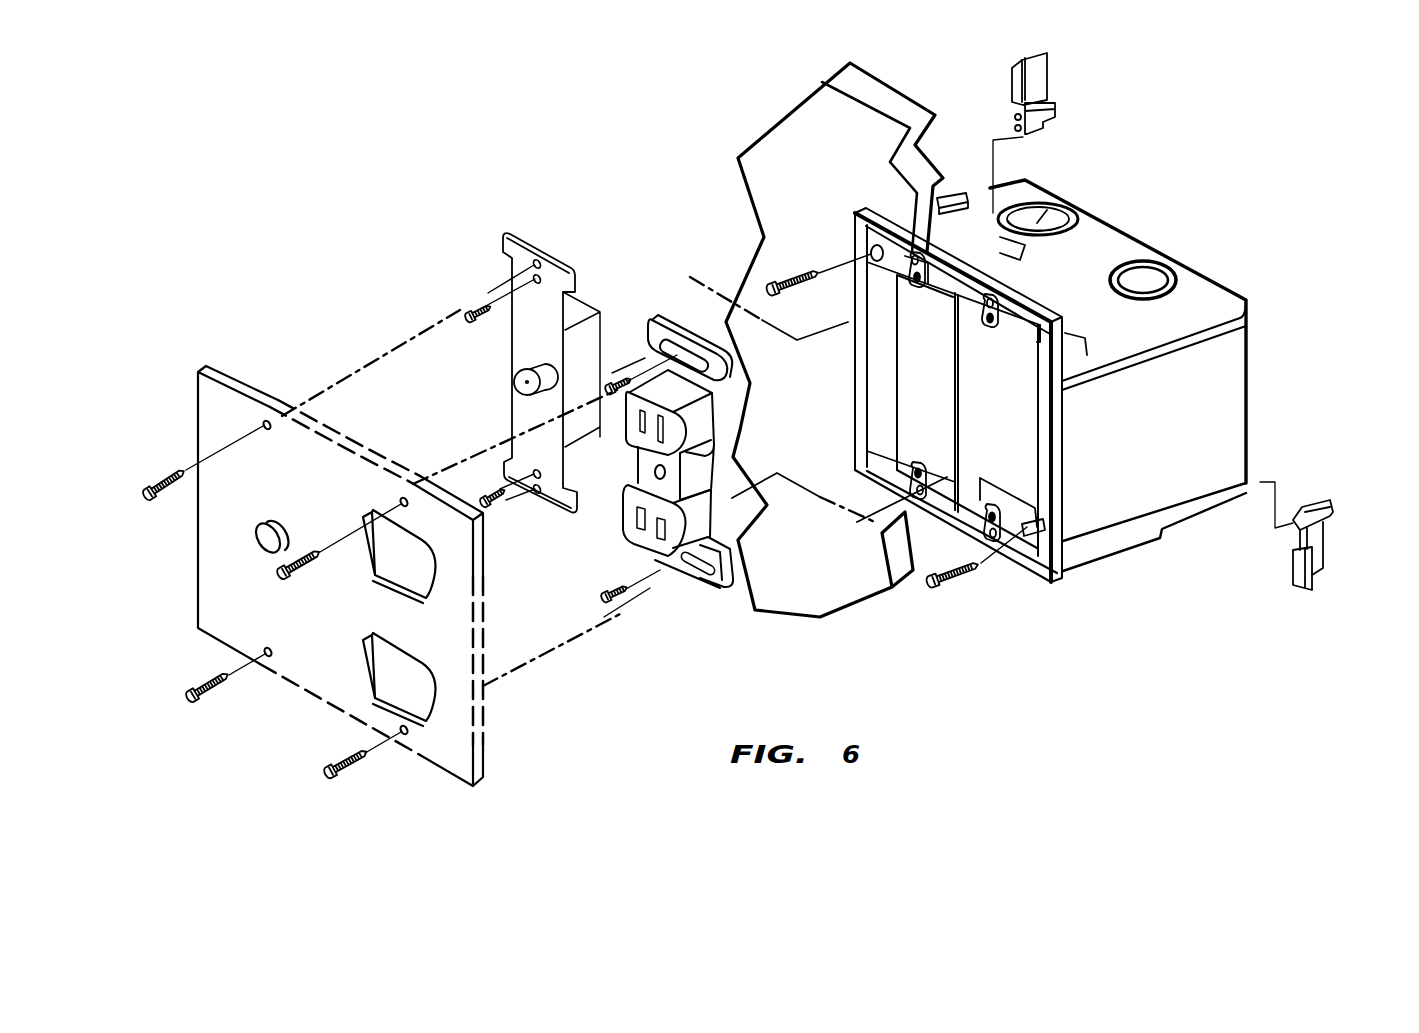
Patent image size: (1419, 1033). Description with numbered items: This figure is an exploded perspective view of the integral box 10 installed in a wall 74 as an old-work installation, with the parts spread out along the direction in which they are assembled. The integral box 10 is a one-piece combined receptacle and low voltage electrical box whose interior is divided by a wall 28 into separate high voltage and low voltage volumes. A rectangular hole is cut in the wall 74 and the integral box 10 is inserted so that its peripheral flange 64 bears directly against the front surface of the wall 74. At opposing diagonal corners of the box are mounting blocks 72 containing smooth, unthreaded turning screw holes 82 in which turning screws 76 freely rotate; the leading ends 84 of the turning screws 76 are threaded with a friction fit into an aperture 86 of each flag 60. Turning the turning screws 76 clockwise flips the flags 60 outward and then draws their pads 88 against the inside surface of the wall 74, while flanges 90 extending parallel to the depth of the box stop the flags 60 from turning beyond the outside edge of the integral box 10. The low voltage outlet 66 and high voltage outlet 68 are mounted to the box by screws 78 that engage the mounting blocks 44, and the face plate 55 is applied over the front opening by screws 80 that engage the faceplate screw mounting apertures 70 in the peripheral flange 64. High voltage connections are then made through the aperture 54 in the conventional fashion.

The integral box 10 is at (1282, 374).
The wall 28 is at (1117, 331).
The mounting blocks 44 is at (917, 281).
The aperture 54 is at (1045, 225).
The face plate 55 is at (225, 401).
The flags 60 is at (1180, 321).
The peripheral flange 64 is at (1067, 570).
The low voltage outlet 66 is at (514, 241).
The high voltage outlet 68 is at (719, 574).
The faceplate screw mounting apertures 70 is at (1005, 287).
The mounting blocks 72 is at (947, 197).
The wall 74 is at (834, 340).
The turning screws 76 is at (790, 288).
The screws 78 is at (479, 329).
The screws 80 is at (170, 481).
The turning screw holes 82 is at (882, 227).
The leading ends 84 is at (822, 262).
The aperture 86 is at (1023, 137).
The pads 88 is at (1018, 85).
The flanges 90 is at (1110, 542).